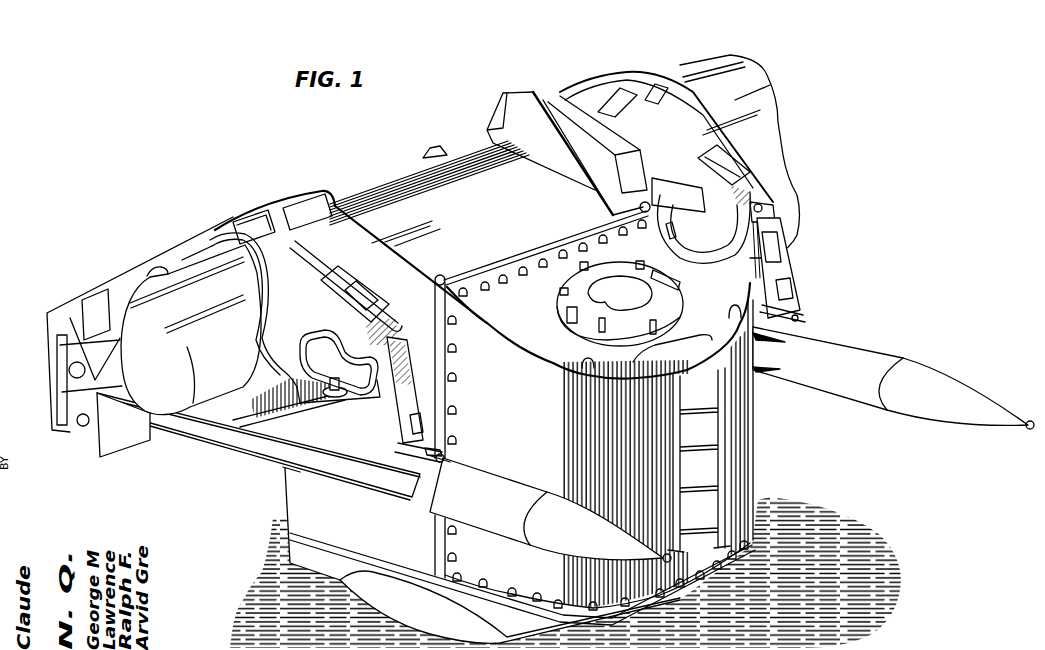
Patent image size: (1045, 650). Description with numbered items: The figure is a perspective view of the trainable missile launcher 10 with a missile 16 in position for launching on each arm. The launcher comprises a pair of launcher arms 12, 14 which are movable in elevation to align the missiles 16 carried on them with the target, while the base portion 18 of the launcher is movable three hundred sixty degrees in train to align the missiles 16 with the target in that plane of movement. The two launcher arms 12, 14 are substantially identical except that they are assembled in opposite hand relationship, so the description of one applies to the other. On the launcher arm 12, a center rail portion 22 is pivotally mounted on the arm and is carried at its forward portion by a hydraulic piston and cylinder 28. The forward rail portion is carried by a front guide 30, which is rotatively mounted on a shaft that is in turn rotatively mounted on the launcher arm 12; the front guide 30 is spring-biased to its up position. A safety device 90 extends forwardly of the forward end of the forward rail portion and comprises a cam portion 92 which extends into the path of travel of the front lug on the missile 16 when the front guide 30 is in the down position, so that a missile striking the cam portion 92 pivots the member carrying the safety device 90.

The trainable missile launcher 10 is at (790, 84).
The launcher arm 12 is at (380, 280).
The launcher arm 14 is at (753, 160).
The missile 16 is at (857, 343).
The base portion 18 is at (748, 470).
The center rail portion 22 is at (283, 403).
The hydraulic piston and cylinder 28 is at (337, 395).
The front guide 30 is at (792, 262).
The safety device 90 is at (445, 461).
The cam portion 92 is at (437, 462).